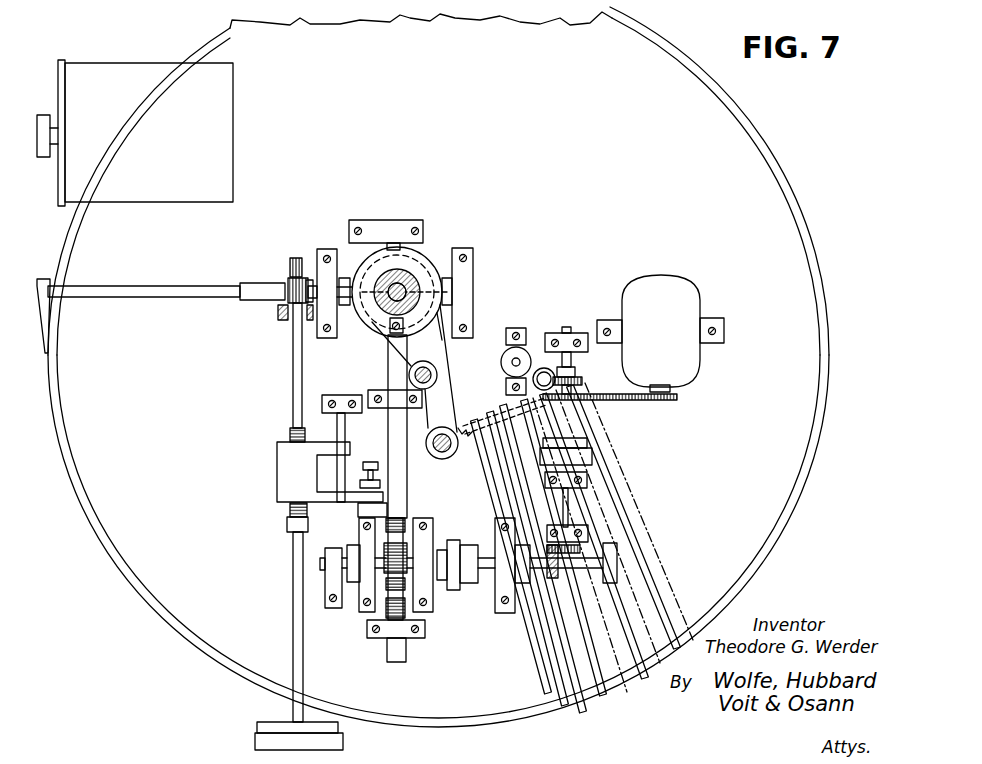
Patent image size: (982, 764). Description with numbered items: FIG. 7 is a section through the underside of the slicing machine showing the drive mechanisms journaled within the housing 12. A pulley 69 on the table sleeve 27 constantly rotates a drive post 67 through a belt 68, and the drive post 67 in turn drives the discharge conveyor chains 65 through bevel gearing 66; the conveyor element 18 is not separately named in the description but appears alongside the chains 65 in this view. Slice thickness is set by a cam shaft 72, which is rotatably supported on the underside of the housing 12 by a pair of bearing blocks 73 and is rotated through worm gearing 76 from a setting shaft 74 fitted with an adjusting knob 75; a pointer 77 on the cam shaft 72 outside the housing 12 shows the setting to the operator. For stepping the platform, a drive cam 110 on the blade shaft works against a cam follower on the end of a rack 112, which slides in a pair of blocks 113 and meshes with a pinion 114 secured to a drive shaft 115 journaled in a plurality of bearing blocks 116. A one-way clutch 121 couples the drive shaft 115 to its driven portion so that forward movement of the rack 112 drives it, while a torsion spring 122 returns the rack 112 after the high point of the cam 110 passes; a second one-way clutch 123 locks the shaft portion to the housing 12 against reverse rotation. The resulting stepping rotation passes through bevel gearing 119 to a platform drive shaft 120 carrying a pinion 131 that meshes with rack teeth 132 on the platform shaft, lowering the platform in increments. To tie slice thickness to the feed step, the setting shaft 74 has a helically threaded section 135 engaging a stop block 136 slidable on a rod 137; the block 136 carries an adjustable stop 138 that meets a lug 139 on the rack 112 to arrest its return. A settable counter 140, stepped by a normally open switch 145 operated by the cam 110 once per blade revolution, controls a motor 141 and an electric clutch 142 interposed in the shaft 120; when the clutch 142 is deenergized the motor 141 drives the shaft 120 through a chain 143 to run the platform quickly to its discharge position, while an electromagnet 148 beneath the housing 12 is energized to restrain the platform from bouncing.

The housing 12 is at (712, 70).
The guide rod 18 is at (532, 678).
The table sleeve 27 is at (385, 308).
The discharge conveyor chains 65 is at (538, 645).
The bevel gearing 66 is at (446, 426).
The drive post 67 is at (440, 459).
The belt 68 is at (450, 348).
The pulley 69 is at (415, 258).
The cam shaft 72 is at (370, 280).
The bearing blocks 73 is at (322, 251).
The setting shaft 74 is at (293, 350).
The adjusting knob 75 is at (258, 740).
The worm gearing 76 is at (288, 271).
The pointer 77 is at (48, 340).
The drive cam 110 is at (378, 252).
The rack 112 is at (387, 652).
The blocks 113 is at (380, 390).
The pinion 114 is at (406, 587).
The drive shaft 115 is at (320, 563).
The bearing blocks 116 is at (362, 613).
The bevel gearing 119 is at (560, 584).
The platform drive shaft 120 is at (572, 357).
The one-way clutch 121 is at (460, 543).
The torsion spring 122 is at (327, 581).
The second one-way clutch 123 is at (617, 567).
The pinion 131 is at (580, 380).
The rack teeth 132 is at (536, 371).
The helically threaded section 135 is at (290, 435).
The stop block 136 is at (292, 466).
The rod 137 is at (345, 426).
The adjustable stop 138 is at (378, 455).
The lug 139 is at (380, 510).
The settable counter 140 is at (135, 65).
The motor 141 is at (688, 293).
The electric clutch 142 is at (592, 450).
The chain 143 is at (653, 401).
The normally open switch 145 is at (390, 222).
The electromagnet 148 is at (501, 366).